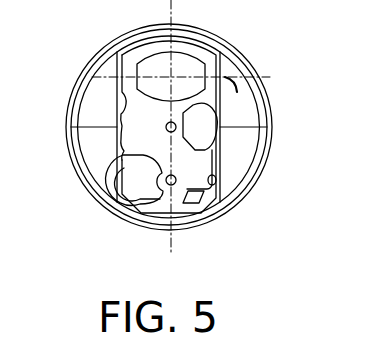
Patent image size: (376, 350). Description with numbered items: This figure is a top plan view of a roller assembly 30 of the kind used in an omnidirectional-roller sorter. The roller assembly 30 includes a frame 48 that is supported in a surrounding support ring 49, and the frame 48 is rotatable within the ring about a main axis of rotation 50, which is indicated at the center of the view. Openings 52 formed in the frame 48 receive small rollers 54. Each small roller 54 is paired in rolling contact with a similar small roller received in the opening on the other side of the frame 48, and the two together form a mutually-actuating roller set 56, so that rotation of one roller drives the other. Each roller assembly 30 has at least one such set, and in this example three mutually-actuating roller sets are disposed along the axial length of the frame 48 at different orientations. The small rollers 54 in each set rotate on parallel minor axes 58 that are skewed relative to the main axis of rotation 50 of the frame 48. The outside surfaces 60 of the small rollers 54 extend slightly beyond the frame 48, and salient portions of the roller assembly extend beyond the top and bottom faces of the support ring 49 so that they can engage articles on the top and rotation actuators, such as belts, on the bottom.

The roller assembly 30 is at (240, 170).
The frame 48 is at (133, 100).
The support ring 49 is at (77, 170).
The main axis of rotation 50 is at (171, 240).
The openings 52 is at (117, 155).
The small roller 54 is at (183, 66).
The mutually-actuating roller set 56 is at (137, 187).
The minor axes 58 is at (237, 92).
The outside surfaces 60 is at (223, 128).